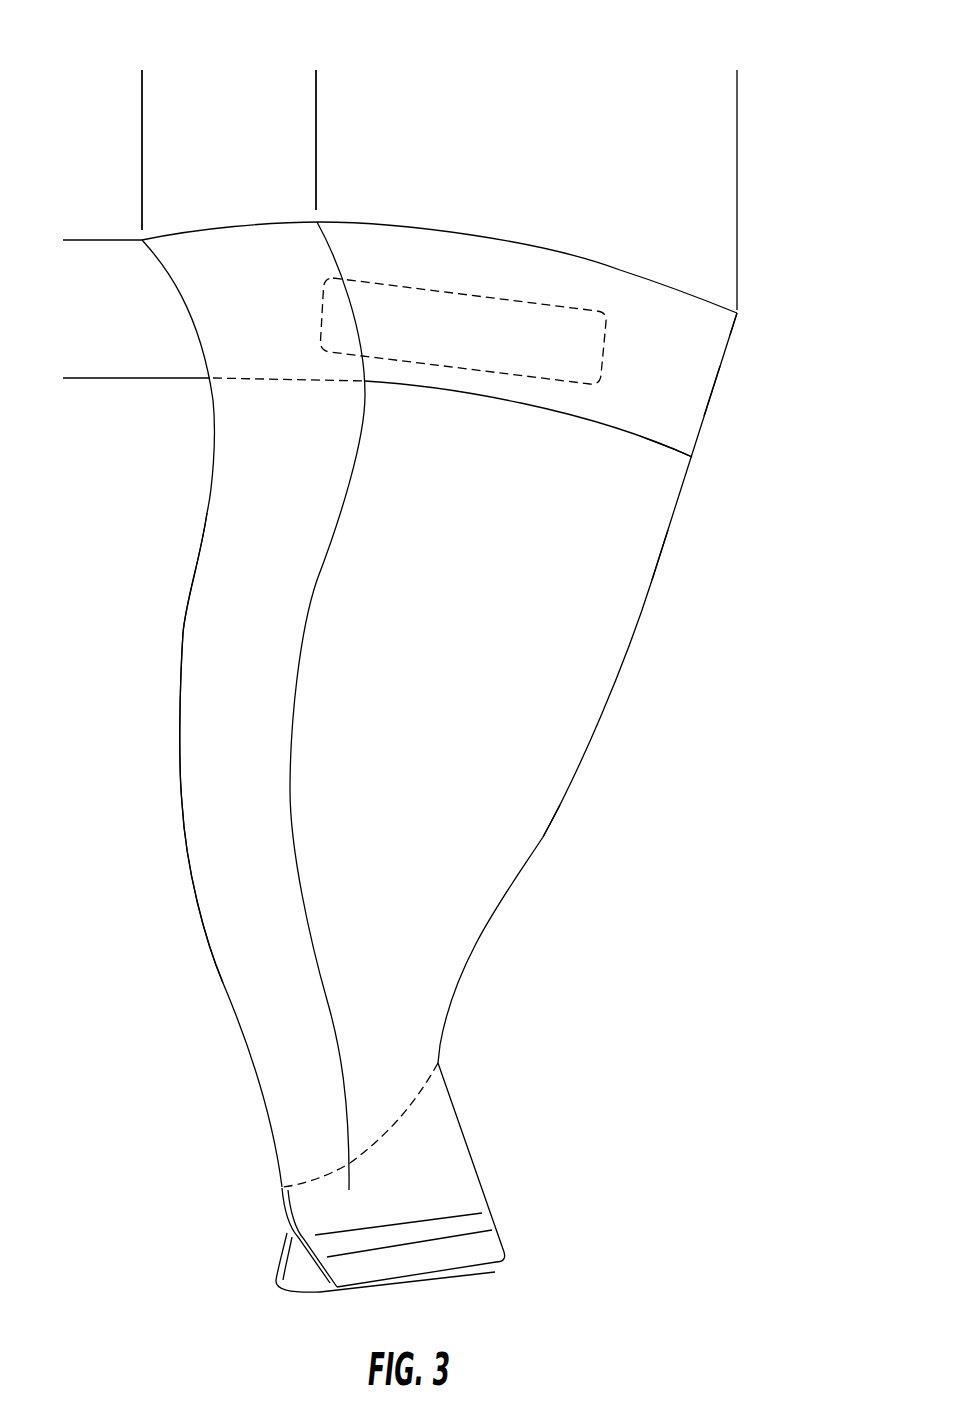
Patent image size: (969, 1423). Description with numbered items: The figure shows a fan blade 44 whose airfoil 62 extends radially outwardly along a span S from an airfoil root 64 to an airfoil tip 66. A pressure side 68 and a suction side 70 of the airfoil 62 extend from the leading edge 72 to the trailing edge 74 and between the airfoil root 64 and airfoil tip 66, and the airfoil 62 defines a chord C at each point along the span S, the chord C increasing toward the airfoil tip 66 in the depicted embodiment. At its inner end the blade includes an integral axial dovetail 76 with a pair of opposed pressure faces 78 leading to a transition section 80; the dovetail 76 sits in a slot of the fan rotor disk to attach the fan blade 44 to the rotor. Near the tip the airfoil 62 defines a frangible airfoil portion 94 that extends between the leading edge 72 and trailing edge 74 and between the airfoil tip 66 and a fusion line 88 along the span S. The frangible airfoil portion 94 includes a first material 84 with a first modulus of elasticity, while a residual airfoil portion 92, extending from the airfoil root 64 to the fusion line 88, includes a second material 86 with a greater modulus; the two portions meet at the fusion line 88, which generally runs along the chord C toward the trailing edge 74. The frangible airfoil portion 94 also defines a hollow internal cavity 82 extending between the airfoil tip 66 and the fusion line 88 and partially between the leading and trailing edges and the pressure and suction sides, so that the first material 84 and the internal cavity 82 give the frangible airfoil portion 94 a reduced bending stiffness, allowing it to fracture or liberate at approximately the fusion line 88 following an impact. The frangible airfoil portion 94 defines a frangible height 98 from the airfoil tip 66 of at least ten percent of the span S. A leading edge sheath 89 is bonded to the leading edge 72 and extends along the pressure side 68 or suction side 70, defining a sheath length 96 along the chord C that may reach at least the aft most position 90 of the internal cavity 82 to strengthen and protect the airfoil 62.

The fan blade 44 is at (98, 90).
The airfoil 62 is at (247, 950).
The airfoil root 64 is at (402, 1108).
The airfoil tip 66 is at (467, 233).
The pressure side 68 is at (405, 673).
The suction side 70 is at (228, 635).
The leading edge 72 is at (178, 803).
The trailing edge 74 is at (618, 701).
The axial dovetail 76 is at (303, 1278).
The pressure faces 78 is at (282, 1252).
The transition section 80 is at (443, 1177).
The internal cavity 82 is at (227, 445).
The first material 84 is at (727, 322).
The second material 86 is at (537, 828).
The fusion line 88 is at (658, 443).
The leading edge sheath 89 is at (197, 720).
The aft most position 90 is at (606, 362).
The residual airfoil portion 92 is at (656, 642).
The frangible airfoil portion 94 is at (720, 418).
The sheath length 96 is at (316, 170).
The frangible height 98 is at (102, 240).
The chord C is at (737, 103).
The span S is at (835, 327).